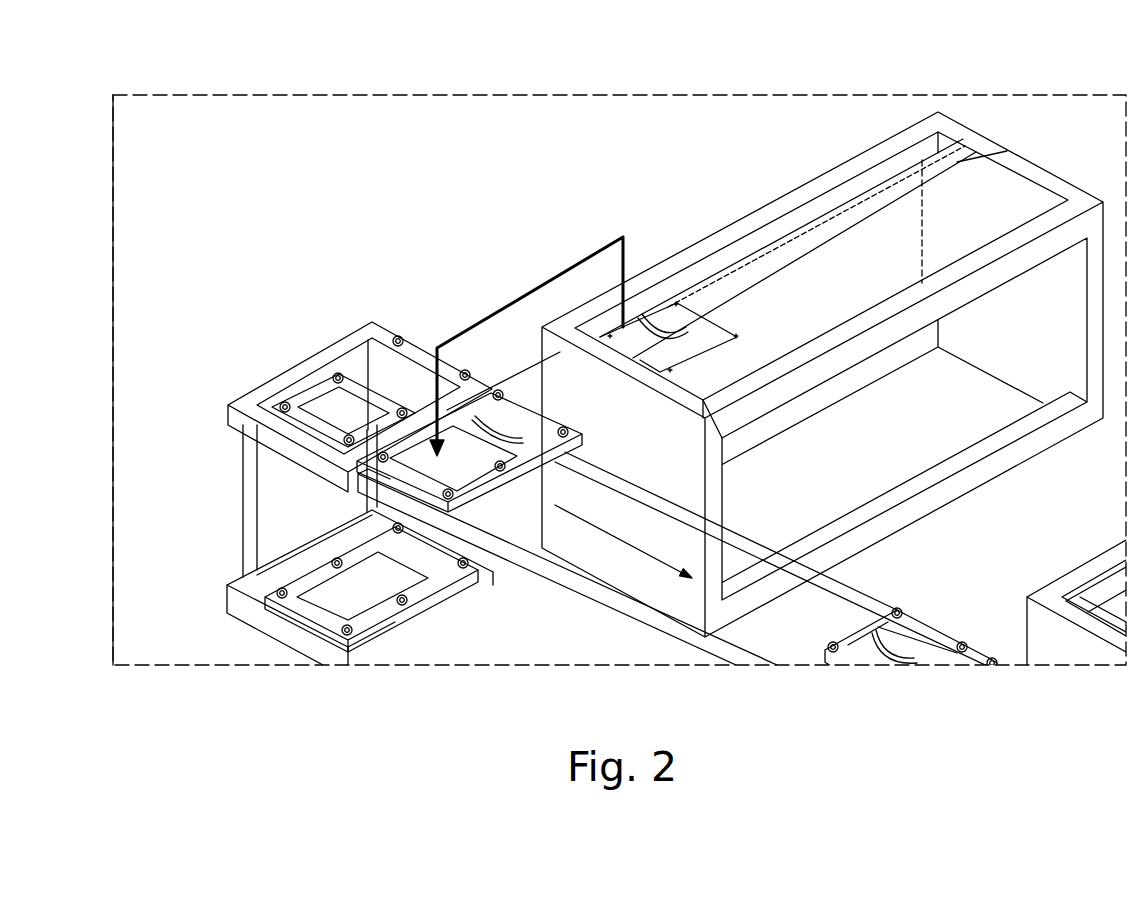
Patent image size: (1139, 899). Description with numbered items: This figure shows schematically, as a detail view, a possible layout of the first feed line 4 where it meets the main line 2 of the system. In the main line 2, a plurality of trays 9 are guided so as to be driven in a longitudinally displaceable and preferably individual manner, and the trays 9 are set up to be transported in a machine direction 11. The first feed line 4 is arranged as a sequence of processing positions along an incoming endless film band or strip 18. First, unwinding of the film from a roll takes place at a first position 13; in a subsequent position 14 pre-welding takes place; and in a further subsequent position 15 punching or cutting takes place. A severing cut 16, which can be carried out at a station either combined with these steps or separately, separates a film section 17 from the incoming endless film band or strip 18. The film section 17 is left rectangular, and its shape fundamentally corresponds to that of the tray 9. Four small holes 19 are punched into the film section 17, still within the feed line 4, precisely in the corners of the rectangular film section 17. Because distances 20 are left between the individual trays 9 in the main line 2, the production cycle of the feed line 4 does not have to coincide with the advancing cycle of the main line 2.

The main line 2 is at (885, 672).
The first feed line 4 is at (1041, 88).
The tray 9 is at (477, 480).
The machine direction 11 is at (613, 540).
The first position 13 is at (956, 194).
The subsequent position 14 is at (865, 240).
The further subsequent position 15 is at (779, 287).
The severing cut 16 is at (737, 327).
The film section 17 is at (683, 356).
The endless film band or strip 18 is at (998, 188).
The small holes 19 is at (645, 323).
The distances 20 is at (812, 654).